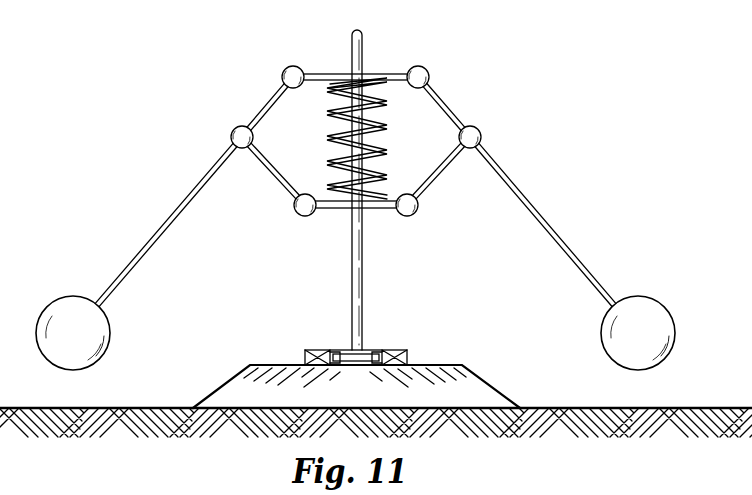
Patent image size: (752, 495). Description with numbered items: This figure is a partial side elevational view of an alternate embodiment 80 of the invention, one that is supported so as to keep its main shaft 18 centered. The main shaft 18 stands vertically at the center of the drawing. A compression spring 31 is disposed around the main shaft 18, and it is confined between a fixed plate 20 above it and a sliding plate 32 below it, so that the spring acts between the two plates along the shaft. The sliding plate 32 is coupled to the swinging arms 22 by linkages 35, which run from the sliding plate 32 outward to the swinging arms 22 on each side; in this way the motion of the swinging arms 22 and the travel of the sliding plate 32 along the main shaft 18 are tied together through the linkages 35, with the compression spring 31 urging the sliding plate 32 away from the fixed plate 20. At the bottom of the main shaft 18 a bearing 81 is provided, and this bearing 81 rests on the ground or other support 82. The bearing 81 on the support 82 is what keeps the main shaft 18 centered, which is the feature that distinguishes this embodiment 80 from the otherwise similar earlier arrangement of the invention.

The main shaft 18 is at (352, 52).
The fixed plate 20 is at (380, 73).
The swinging arms 22 is at (208, 175).
The compression spring 31 is at (327, 113).
The sliding plate 32 is at (330, 212).
The linkages 35 is at (272, 178).
The embodiment 80 is at (376, 232).
The bearing 81 is at (384, 352).
The ground or other support 82 is at (475, 373).